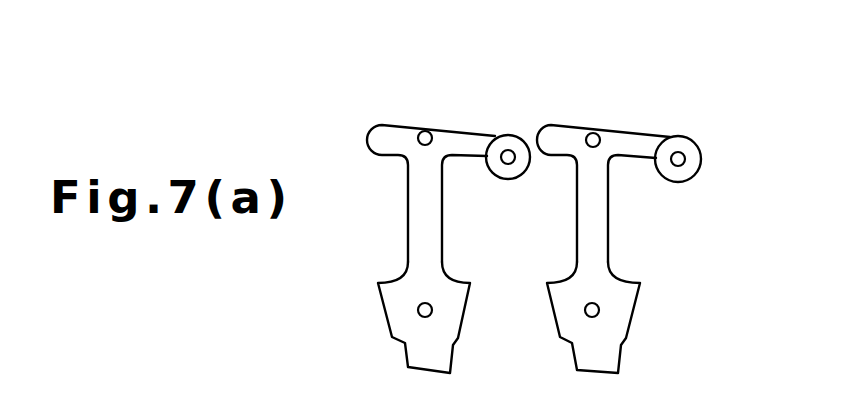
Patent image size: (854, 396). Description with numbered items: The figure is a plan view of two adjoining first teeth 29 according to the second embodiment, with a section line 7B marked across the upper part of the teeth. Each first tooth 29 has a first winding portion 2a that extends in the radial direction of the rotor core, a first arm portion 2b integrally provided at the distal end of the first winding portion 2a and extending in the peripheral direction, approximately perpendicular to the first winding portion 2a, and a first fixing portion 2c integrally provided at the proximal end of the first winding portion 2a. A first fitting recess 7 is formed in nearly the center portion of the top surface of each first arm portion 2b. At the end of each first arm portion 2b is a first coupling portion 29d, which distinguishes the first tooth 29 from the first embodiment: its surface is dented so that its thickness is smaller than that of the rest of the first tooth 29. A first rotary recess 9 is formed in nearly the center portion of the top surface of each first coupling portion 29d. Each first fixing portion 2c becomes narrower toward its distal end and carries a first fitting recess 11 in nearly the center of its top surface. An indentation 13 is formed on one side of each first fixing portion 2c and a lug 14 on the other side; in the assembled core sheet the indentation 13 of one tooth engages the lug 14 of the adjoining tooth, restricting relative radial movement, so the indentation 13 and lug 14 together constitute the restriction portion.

The first tooth 29 is at (370, 78).
The first coupling portion 29d is at (509, 150).
The first rotary recess 9 is at (508, 150).
The first fitting recess 7 is at (425, 131).
The first winding portion 2a is at (584, 228).
The first arm portion 2b is at (380, 141).
The first fixing portion 2c is at (388, 298).
The first fitting recess 11 is at (586, 309).
The indentation 13 is at (405, 356).
The lug 14 is at (458, 360).
The section line 7B is at (400, 158).